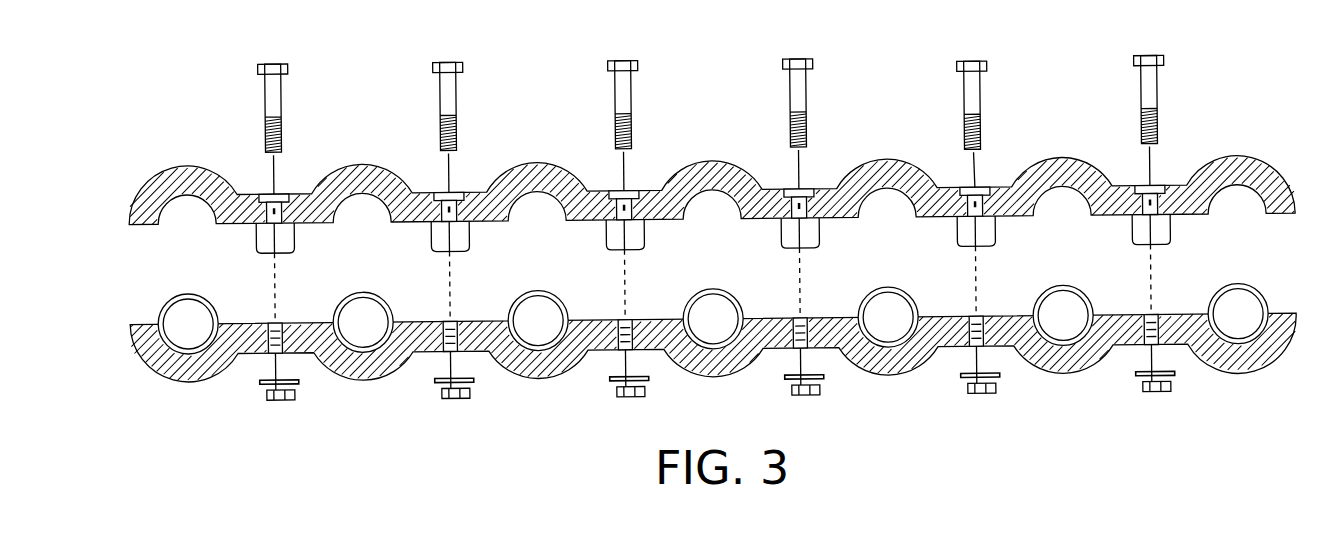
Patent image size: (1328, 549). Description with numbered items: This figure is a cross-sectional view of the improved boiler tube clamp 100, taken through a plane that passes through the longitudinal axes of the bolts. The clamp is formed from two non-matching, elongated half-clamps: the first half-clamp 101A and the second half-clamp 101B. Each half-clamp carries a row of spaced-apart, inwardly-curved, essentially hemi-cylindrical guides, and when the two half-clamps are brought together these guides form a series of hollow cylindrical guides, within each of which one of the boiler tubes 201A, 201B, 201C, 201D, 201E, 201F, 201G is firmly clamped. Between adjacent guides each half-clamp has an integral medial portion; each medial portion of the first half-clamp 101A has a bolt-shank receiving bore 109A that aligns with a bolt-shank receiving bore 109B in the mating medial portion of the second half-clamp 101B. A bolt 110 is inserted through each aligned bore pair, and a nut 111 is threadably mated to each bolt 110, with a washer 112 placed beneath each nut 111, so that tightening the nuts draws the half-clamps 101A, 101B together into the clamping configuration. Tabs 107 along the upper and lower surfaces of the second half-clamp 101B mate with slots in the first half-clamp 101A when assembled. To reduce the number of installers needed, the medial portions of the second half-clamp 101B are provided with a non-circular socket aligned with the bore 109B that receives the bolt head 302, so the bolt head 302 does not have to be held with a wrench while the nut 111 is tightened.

The boiler tube clamp 100 is at (702, 226).
The first half-clamp 101A is at (184, 358).
The second half-clamp 101B is at (190, 172).
The bolt-shank receiving bore 109A is at (263, 337).
The bolt-shank receiving bore 109B is at (262, 206).
The bolt 110 is at (669, 206).
The bolt head 302 is at (271, 89).
The tab 107 is at (288, 233).
The nut 111 is at (292, 378).
The washer 112 is at (290, 392).
The boiler tube 201A is at (181, 285).
The boiler tube 201B is at (356, 285).
The boiler tube 201C is at (531, 285).
The boiler tube 201D is at (706, 285).
The boiler tube 201E is at (881, 285).
The boiler tube 201F is at (1056, 285).
The boiler tube 201G is at (1231, 285).